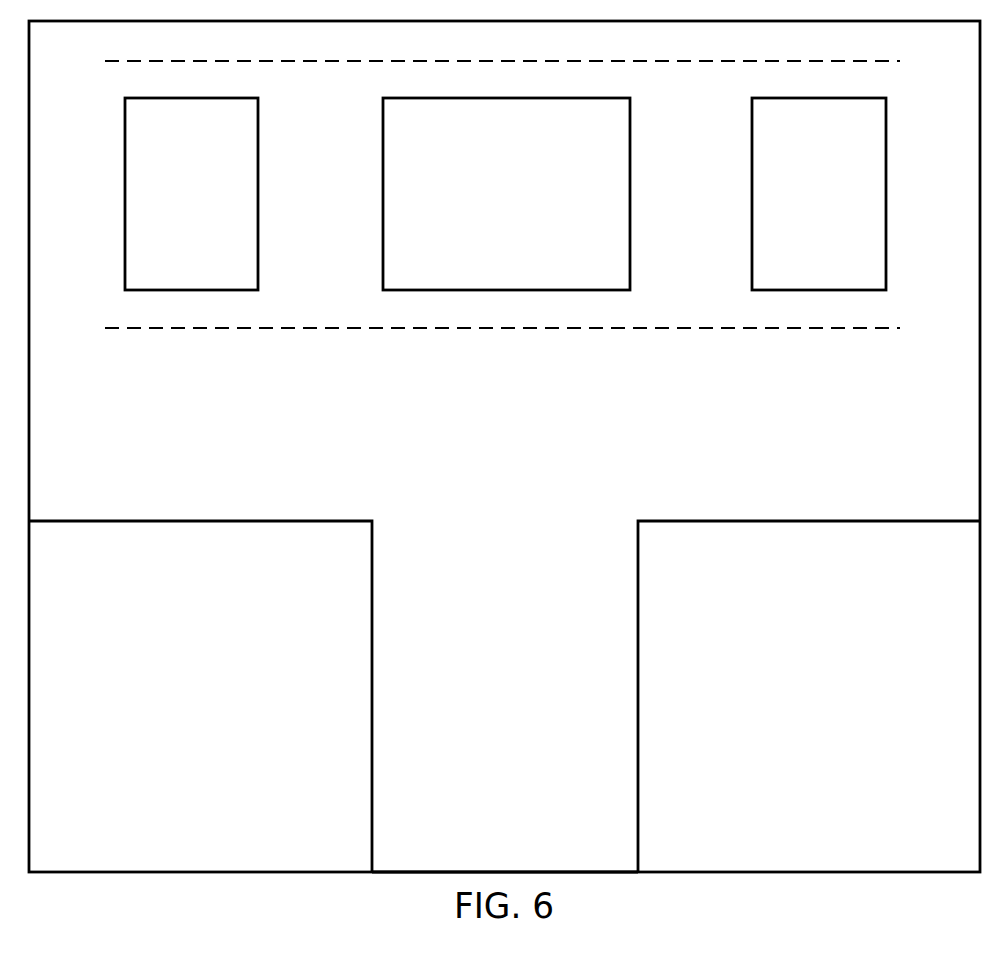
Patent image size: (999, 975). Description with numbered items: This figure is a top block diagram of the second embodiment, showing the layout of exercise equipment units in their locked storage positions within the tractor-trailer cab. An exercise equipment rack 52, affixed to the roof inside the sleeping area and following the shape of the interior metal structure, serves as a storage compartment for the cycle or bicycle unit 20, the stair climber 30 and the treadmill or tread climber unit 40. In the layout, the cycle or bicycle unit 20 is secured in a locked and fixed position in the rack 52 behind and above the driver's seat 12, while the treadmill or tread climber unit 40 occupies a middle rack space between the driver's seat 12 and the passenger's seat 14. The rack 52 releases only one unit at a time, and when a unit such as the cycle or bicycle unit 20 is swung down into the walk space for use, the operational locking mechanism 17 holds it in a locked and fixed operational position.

The exercise equipment rack 52 is at (146, 43).
The treadmill or tread climber unit 40 is at (258, 201).
The stair climber 30 is at (631, 212).
The cycle or bicycle unit 20 is at (886, 211).
The operational locking mechanism 17 is at (523, 534).
The passenger's seat 14 is at (213, 713).
The driver's seat 12 is at (841, 736).